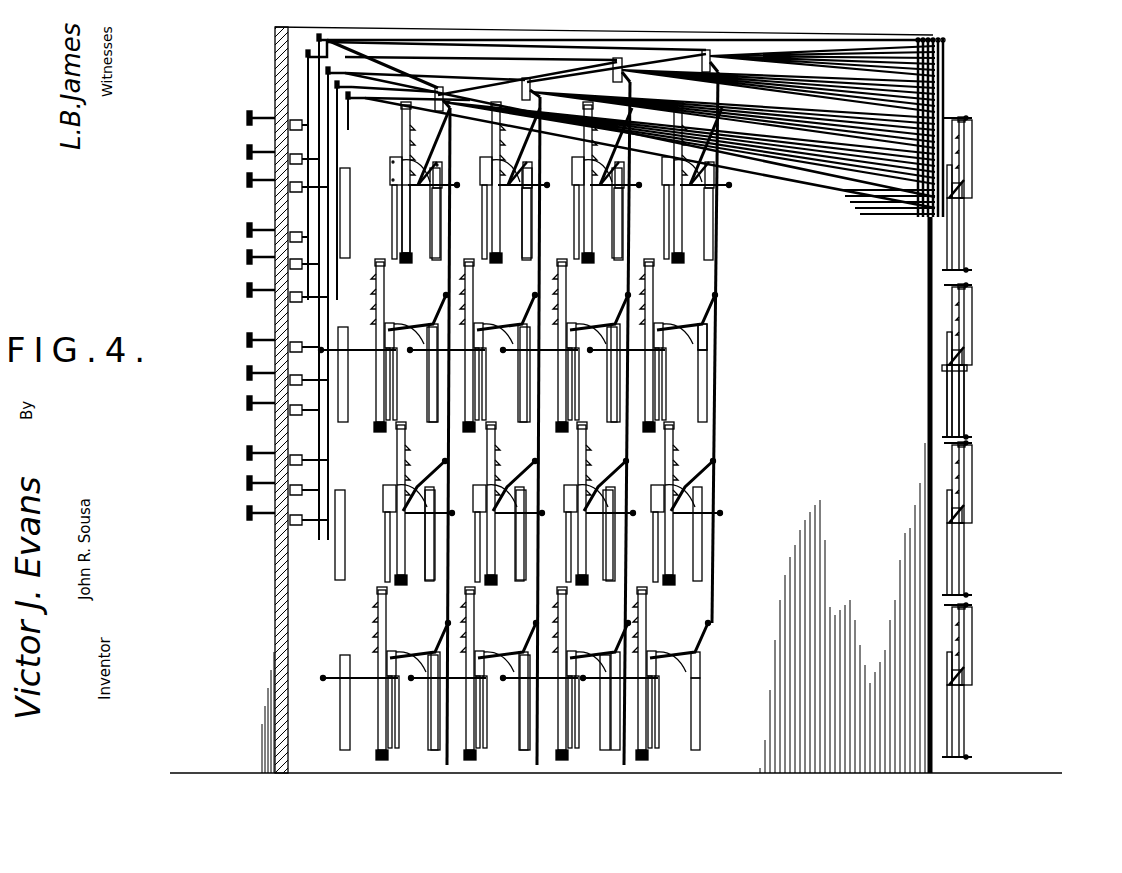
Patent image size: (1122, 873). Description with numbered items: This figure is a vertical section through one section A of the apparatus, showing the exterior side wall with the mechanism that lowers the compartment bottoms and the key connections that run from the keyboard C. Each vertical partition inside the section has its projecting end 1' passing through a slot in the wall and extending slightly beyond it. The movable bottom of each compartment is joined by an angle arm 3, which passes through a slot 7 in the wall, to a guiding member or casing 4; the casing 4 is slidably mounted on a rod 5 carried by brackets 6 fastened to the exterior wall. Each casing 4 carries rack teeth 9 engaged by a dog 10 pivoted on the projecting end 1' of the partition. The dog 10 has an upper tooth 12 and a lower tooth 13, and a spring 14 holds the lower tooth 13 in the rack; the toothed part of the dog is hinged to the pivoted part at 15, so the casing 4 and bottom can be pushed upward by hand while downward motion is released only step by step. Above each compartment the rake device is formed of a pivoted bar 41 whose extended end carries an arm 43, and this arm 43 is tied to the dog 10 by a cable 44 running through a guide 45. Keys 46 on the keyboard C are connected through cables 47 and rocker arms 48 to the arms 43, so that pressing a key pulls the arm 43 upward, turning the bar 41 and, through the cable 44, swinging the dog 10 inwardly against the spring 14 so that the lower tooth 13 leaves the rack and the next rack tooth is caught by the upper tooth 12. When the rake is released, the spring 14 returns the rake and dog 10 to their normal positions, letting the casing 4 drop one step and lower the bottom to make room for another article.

The section A is at (261, 48).
The keyboard C is at (270, 606).
The projecting end of partition 1' is at (717, 476).
The angle arm 3 is at (935, 675).
The guiding member or casing 4 is at (967, 633).
The rod 5 is at (952, 737).
The bracket 6 is at (962, 762).
The slot 7 is at (568, 565).
The rack teeth 9 is at (960, 469).
The dog 10 is at (985, 530).
The upper tooth 12 is at (968, 517).
The lower tooth 13 is at (647, 694).
The spring 14 is at (963, 534).
The hinge of dog 15 is at (357, 680).
The bar 41 is at (925, 645).
The arm 43 is at (962, 655).
The cable 44 is at (935, 505).
The guide 45 is at (967, 508).
The key 46 is at (245, 455).
The cable 47 is at (715, 608).
The rocker arm 48 is at (945, 60).